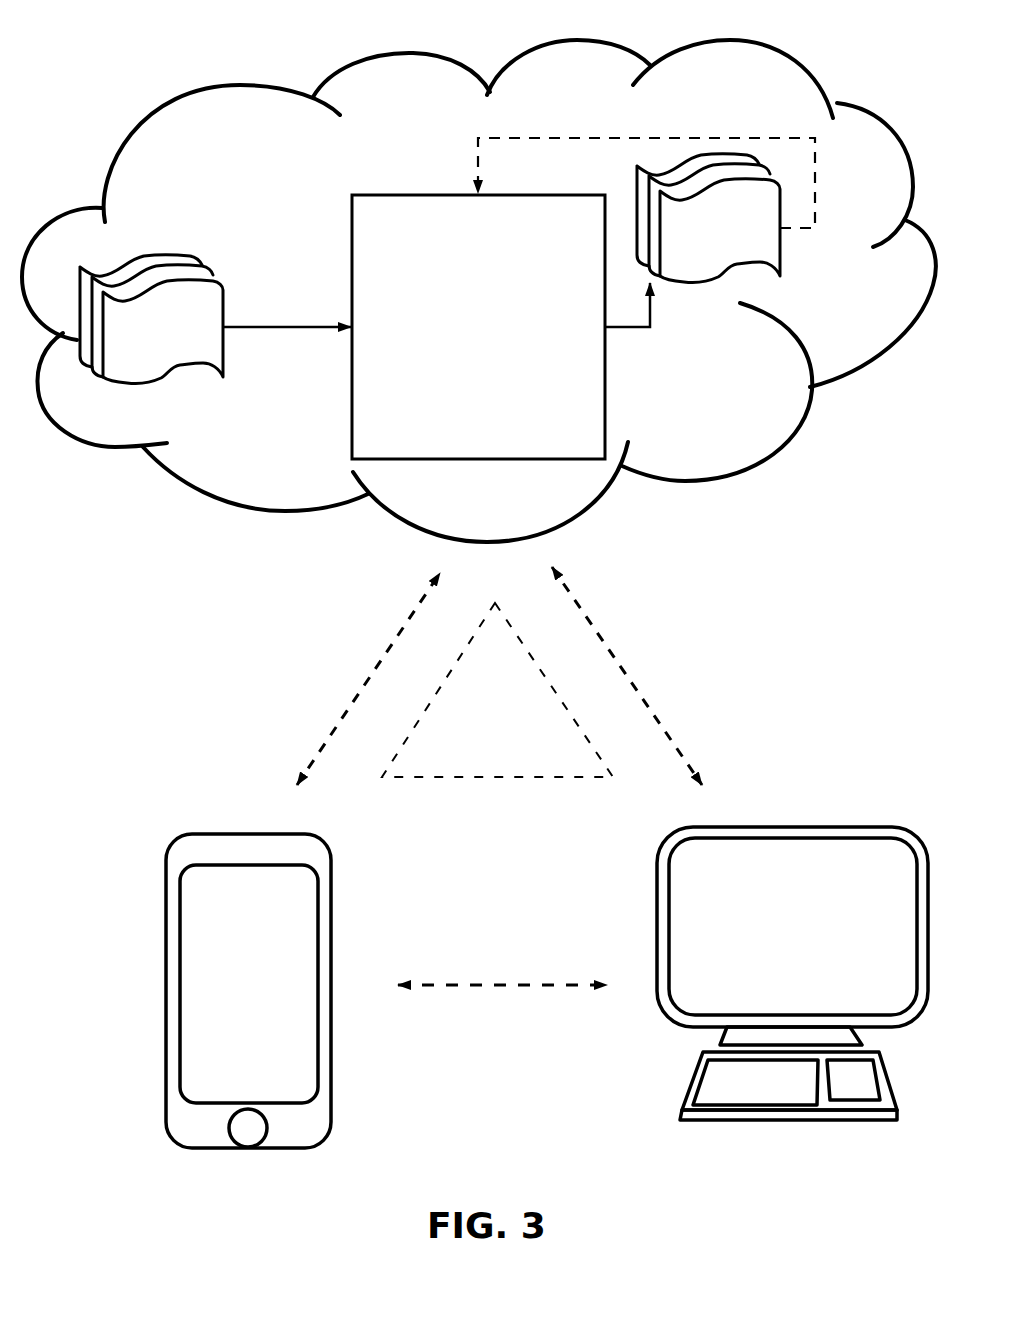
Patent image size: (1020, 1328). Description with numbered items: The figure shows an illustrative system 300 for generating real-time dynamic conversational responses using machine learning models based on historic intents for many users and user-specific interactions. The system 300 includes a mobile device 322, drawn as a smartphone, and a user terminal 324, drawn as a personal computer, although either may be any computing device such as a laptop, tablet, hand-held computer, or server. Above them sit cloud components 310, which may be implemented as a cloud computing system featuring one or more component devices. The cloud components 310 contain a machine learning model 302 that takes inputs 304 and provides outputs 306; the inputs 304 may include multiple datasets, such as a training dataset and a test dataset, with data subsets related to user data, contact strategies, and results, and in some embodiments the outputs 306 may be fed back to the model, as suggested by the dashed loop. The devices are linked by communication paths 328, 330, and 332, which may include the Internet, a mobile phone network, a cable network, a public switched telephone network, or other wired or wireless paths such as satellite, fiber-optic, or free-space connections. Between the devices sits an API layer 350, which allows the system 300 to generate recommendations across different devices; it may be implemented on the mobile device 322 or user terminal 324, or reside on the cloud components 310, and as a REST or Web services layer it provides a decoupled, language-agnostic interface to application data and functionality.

The system 300 is at (479, 276).
The machine learning model 302 is at (478, 327).
The inputs 304 is at (172, 258).
The outputs 306 is at (762, 264).
The cloud components 310 is at (778, 92).
The mobile device 322 is at (235, 800).
The user terminal 324 is at (788, 808).
The communication path 328 is at (320, 655).
The communication path 330 is at (710, 625).
The communication path 332 is at (496, 947).
The API layer 350 is at (497, 690).